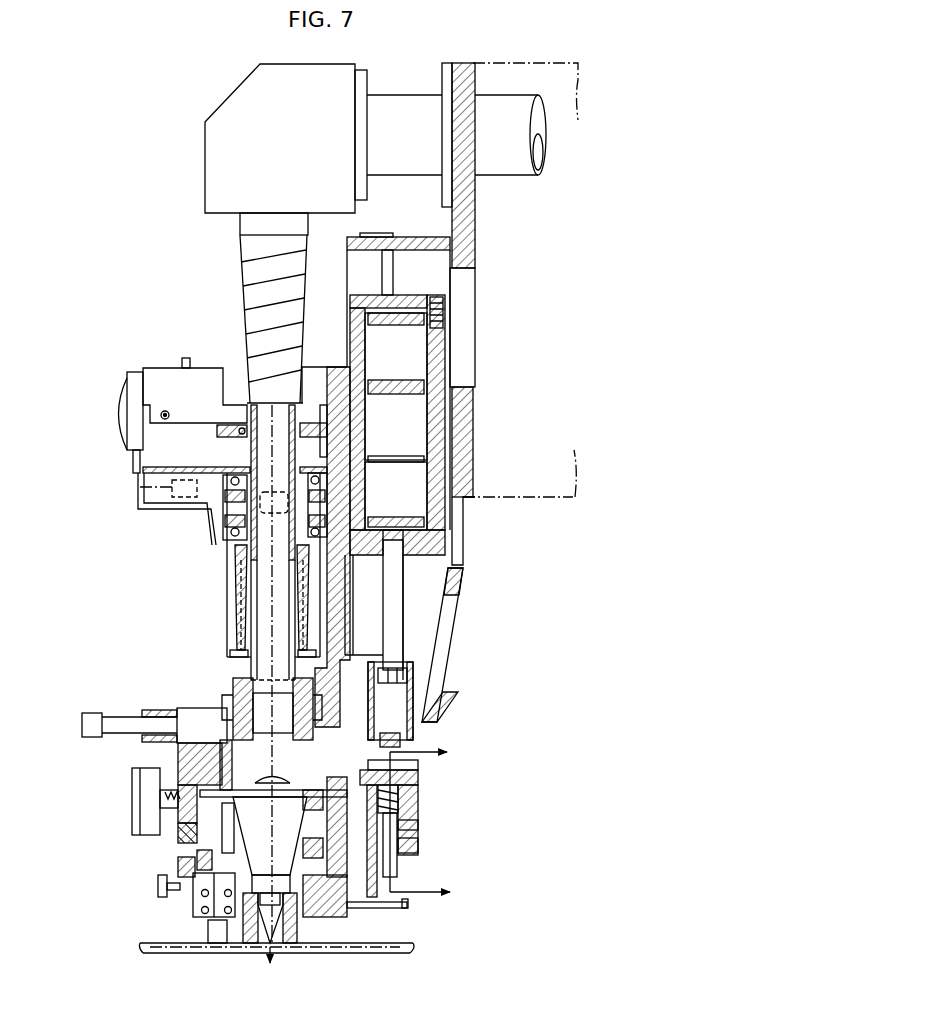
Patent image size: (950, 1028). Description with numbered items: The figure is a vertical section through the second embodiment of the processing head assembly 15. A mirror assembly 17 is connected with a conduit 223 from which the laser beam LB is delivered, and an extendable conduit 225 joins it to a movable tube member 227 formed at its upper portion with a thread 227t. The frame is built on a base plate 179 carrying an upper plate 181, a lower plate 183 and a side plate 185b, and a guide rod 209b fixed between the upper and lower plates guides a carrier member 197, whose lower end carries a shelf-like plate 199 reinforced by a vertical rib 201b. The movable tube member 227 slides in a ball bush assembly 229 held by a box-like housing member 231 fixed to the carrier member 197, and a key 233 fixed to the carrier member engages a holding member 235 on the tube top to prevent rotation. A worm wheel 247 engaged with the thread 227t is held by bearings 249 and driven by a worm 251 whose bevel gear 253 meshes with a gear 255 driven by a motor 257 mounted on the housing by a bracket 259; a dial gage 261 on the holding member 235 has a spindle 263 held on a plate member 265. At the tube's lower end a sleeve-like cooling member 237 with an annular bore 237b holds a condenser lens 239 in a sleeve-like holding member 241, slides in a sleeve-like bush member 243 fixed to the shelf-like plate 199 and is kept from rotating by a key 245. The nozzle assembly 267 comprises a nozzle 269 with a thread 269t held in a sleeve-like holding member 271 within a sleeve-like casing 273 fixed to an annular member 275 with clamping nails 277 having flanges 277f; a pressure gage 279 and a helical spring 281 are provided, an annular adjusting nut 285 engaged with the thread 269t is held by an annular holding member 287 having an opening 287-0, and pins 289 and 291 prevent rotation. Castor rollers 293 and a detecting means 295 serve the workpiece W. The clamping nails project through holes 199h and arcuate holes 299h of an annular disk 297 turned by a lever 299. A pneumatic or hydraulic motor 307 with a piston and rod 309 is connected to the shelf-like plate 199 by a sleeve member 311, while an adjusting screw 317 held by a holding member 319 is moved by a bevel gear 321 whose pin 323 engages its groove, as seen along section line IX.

The processing head assembly 15 is at (148, 155).
The mirror assembly 17 is at (226, 112).
The base plate 179 is at (458, 80).
The upper plate 181 is at (458, 242).
The conduit 223 is at (404, 106).
The laser beam LB is at (548, 137).
The side plate 185b is at (352, 238).
The guide rod 209b is at (388, 247).
The extendable conduit 225 is at (243, 268).
The vertical rib 201b is at (250, 350).
The carrier member 197 is at (316, 374).
The pneumatic or hydraulic motor 307 is at (446, 355).
The key 233 is at (333, 412).
The worm wheel 247 is at (332, 508).
The piston and rod 309 is at (408, 580).
The motor 257 is at (152, 368).
The dial gage 261 is at (120, 384).
The holding member 235 is at (238, 422).
The worm 251 is at (262, 470).
The bracket 259 is at (143, 469).
The gear 255 is at (140, 487).
The spindle 263 is at (138, 497).
The plate member 265 is at (150, 509).
The bevel gear 253 is at (198, 520).
The bearings 249 is at (226, 532).
The thread 227t is at (242, 560).
The box-like housing member 231 is at (230, 592).
The movable tube member 227 is at (246, 613).
The ball bush assembly 229 is at (239, 626).
The key 245 is at (452, 588).
The sleeve member 311 is at (410, 665).
The flange 277f is at (415, 692).
The arcuate hole 299h is at (412, 722).
The hole 199h is at (412, 750).
The annular disk 297 is at (142, 710).
The annular bore 237b is at (226, 702).
The sleeve-like cooling member 237 is at (236, 692).
The lever 299 is at (90, 714).
The sleeve-like bush member 243 is at (224, 723).
The shelf-like plate 199 is at (178, 752).
The annular member 275 is at (180, 770).
The pressure gage 279 is at (133, 790).
The helical spring 281 is at (168, 798).
The sleeve-like casing 273 is at (178, 832).
The sleeve-like holding member 271 is at (178, 862).
The annular adjusting nut 285 is at (196, 862).
The opening 287-0 is at (168, 885).
The annular holding member 287 is at (200, 905).
The nozzle assembly 267 is at (92, 945).
The sleeve-like holding member 241 is at (240, 778).
The pin 289 is at (312, 800).
The condenser lens 239 is at (280, 800).
The pin 291 is at (320, 840).
The lower plate 183 is at (420, 772).
The clamping nail 277 is at (400, 794).
The adjusting screw 317 is at (412, 800).
The bevel gear 321 is at (415, 823).
The holding member 319 is at (415, 845).
The pin 323 is at (405, 848).
The section line IX- IX is at (435, 822).
The detecting means 295 is at (408, 908).
The castor rollers 293 is at (218, 945).
The nozzle 269 is at (285, 938).
The thread 269t is at (322, 905).
The workpiece W is at (415, 955).